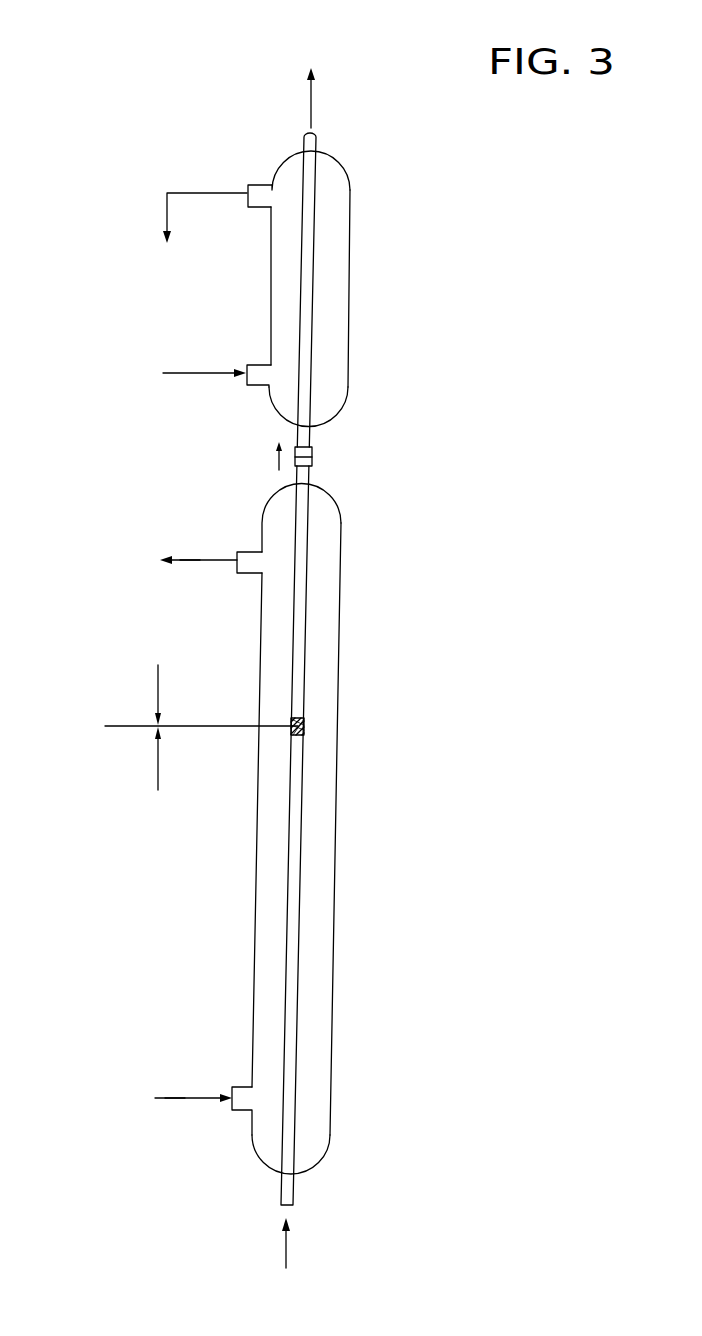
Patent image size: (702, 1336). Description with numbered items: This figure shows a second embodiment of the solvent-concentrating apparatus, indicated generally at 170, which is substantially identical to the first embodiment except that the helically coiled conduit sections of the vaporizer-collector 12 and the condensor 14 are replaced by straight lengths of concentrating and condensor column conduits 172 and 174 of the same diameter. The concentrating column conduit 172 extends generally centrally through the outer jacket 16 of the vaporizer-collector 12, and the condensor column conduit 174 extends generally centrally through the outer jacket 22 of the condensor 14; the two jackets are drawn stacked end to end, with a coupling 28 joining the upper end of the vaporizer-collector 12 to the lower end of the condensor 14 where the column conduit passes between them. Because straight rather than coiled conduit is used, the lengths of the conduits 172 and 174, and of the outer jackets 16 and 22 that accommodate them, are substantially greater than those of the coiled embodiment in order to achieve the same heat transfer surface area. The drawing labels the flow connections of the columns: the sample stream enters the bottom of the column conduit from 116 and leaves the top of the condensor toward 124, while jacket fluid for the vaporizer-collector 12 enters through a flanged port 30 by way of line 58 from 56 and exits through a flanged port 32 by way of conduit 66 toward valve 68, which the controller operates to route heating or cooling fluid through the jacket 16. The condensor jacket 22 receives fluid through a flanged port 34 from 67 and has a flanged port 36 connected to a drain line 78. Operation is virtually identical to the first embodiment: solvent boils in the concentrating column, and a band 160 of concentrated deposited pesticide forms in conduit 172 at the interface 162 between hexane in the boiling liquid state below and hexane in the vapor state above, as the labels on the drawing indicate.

The apparatus 170 is at (392, 610).
The vaporizer-collector 12 is at (343, 542).
The condensor 14 is at (354, 326).
The outer jacket 16 is at (332, 1120).
The outer jacket 22 is at (352, 184).
The coupling joining vessels 28 is at (314, 456).
The lower inlet flange 30 is at (240, 1112).
The upper outlet flange of lower vessel 32 is at (255, 550).
The inlet flange of upper vessel 34 is at (250, 388).
The drain flange 36 is at (256, 214).
The inlet line from 56 58 is at (186, 1094).
The conduit 66 is at (193, 558).
The drain line 78 is at (197, 193).
The band of concentrated deposited pesticide 160 is at (306, 722).
The interface 162 is at (105, 727).
The concentrating column conduit 172 is at (299, 933).
The condensor column conduit 174 is at (314, 228).
The outlet to element 124 is at (309, 87).
The inlet from element 116 is at (280, 1260).
The inlet from element 67 is at (145, 372).
The valve 68 is at (145, 560).
The inlet from element 56 is at (118, 1097).